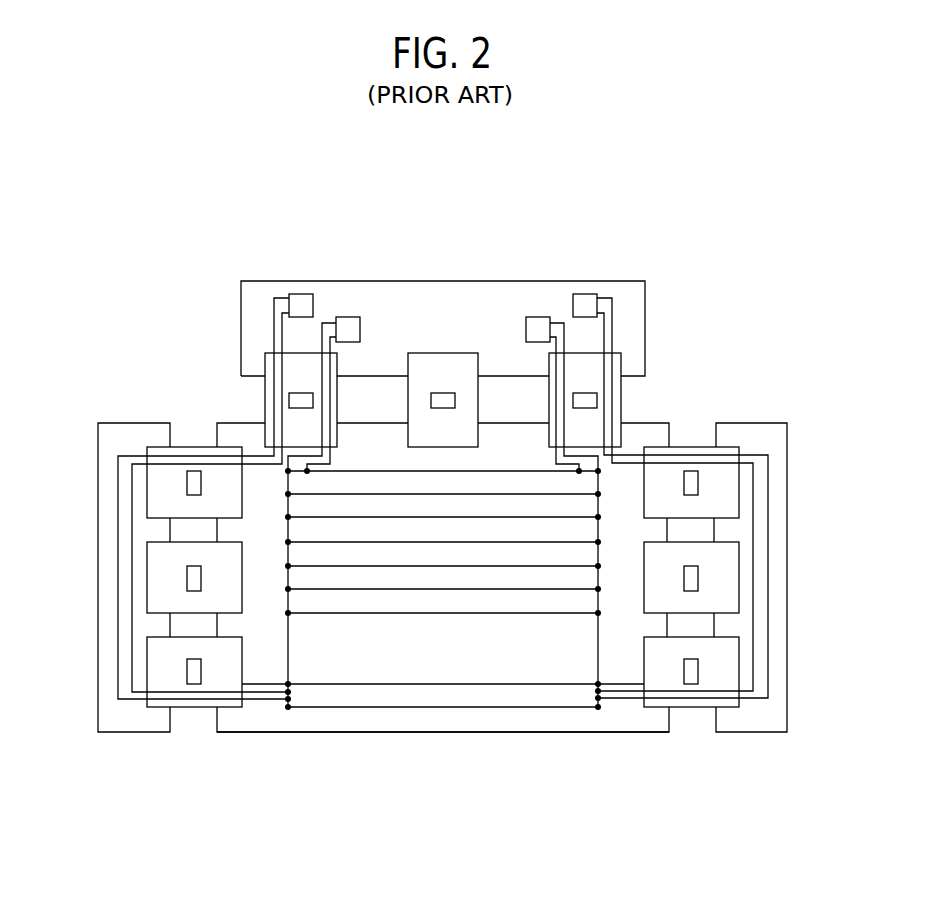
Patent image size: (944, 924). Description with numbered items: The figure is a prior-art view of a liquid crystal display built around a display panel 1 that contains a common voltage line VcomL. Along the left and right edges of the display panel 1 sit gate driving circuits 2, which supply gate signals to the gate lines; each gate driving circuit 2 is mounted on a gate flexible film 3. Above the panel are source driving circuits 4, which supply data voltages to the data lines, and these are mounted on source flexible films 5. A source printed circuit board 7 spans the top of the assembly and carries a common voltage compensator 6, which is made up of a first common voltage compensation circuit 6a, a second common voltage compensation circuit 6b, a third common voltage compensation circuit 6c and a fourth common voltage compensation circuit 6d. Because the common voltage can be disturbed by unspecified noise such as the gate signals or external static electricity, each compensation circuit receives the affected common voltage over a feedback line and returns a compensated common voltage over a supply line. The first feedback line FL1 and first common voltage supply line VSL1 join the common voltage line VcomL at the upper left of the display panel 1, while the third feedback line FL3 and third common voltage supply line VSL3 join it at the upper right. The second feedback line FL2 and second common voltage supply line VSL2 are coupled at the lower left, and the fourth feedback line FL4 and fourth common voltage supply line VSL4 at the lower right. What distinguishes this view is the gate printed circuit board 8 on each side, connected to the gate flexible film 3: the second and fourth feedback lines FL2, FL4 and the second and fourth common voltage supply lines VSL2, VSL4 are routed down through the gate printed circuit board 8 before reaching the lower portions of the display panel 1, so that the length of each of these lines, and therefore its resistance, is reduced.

The display panel 1 is at (552, 732).
The gate driving circuit 2 is at (187, 485).
The gate flexible film 3 is at (165, 503).
The source driving circuit 4 is at (288, 400).
The source flexible film 5 is at (296, 368).
The common voltage compensator 6 is at (444, 277).
The first common voltage compensation circuit 6a is at (348, 317).
The second common voltage compensation circuit 6b is at (300, 294).
The third common voltage compensation circuit 6c is at (538, 317).
The fourth common voltage compensation circuit 6d is at (586, 280).
The source printed circuit board 7 is at (647, 313).
The gate printed circuit board 8 is at (118, 423).
The first feedback line FL1 is at (322, 390).
The second feedback line FL2 is at (273, 305).
The third feedback line FL3 is at (564, 390).
The fourth feedback line FL4 is at (612, 364).
The first common voltage supply line VSL1 is at (330, 410).
The second common voltage supply line VSL2 is at (280, 333).
The third common voltage supply line VSL3 is at (556, 410).
The fourth common voltage supply line VSL4 is at (604, 394).
The common voltage line VcomL is at (424, 707).